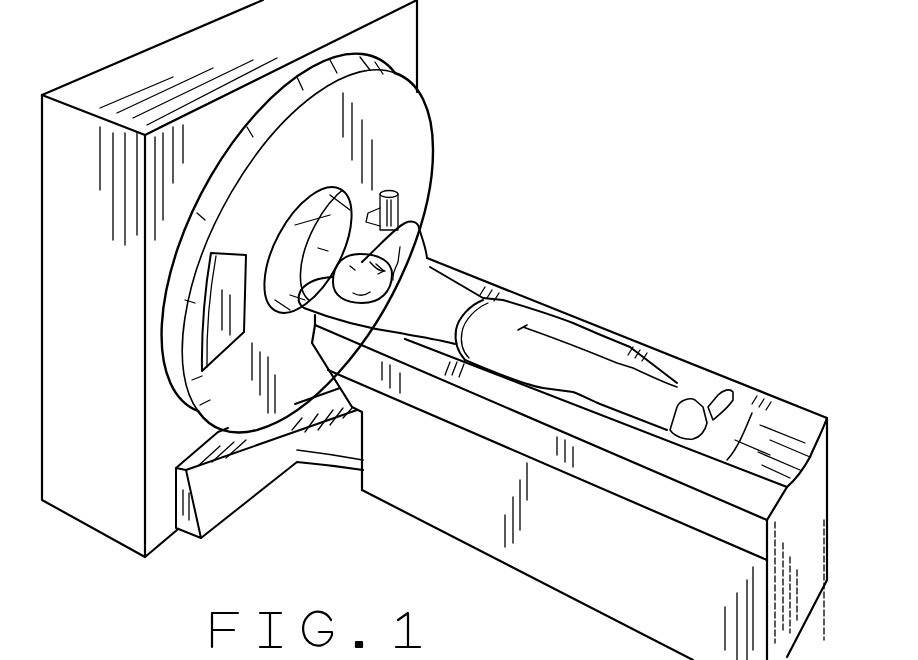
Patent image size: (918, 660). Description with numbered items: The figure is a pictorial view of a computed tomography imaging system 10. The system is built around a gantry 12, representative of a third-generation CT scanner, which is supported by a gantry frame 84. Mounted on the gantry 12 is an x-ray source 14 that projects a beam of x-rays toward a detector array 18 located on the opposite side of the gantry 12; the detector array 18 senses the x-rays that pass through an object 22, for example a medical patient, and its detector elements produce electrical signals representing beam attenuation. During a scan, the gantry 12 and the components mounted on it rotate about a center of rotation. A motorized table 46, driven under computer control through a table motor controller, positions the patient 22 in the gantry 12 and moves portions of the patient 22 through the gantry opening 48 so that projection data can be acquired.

The CT imaging system 10 is at (337, 475).
The gantry 12 is at (75, 143).
The x-ray source 14 is at (398, 214).
The detector array 18 is at (215, 327).
The object 22 is at (438, 293).
The motorized table 46 is at (443, 493).
The gantry opening 48 is at (290, 224).
The gantry frame 84 is at (397, 113).